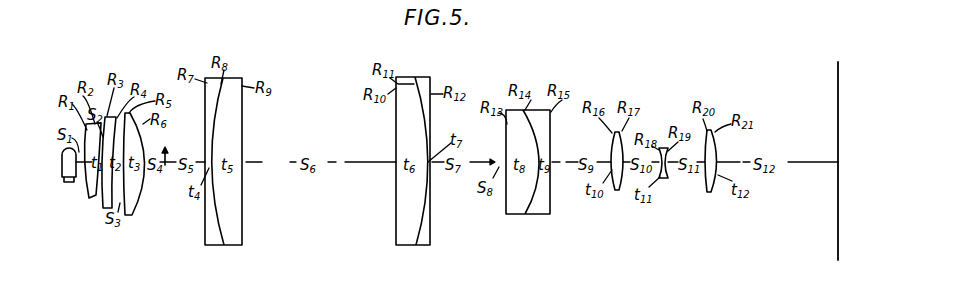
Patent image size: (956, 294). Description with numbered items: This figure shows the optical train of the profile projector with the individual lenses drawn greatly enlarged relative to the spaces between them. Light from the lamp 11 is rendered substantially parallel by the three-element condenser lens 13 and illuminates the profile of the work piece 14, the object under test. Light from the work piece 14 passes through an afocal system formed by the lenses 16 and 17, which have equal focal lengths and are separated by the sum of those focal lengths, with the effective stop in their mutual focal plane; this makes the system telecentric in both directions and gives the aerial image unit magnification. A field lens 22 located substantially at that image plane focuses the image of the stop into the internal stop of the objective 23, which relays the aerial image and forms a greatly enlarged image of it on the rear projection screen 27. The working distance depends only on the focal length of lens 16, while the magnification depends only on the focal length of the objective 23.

The lamp 11 is at (69, 182).
The condenser lens 13 is at (147, 223).
The work piece 14 is at (168, 152).
The lens 16 is at (230, 243).
The lens 17 is at (409, 243).
The field lens 22 is at (535, 215).
The objective 23 is at (717, 200).
The rear projection screen 27 is at (838, 228).